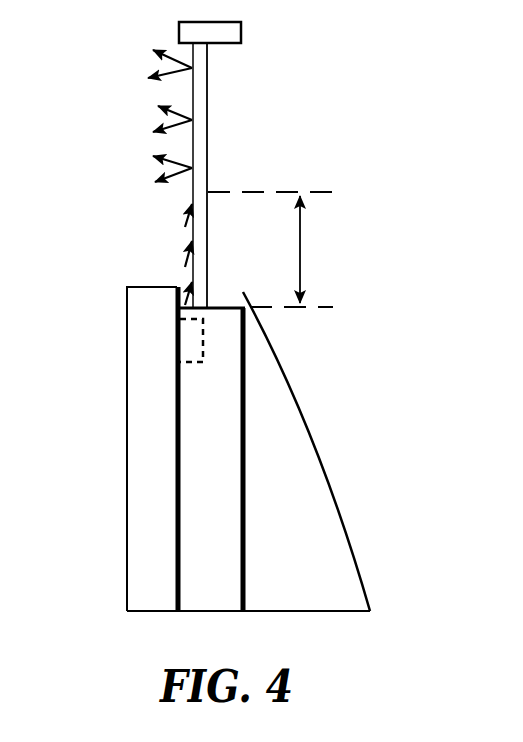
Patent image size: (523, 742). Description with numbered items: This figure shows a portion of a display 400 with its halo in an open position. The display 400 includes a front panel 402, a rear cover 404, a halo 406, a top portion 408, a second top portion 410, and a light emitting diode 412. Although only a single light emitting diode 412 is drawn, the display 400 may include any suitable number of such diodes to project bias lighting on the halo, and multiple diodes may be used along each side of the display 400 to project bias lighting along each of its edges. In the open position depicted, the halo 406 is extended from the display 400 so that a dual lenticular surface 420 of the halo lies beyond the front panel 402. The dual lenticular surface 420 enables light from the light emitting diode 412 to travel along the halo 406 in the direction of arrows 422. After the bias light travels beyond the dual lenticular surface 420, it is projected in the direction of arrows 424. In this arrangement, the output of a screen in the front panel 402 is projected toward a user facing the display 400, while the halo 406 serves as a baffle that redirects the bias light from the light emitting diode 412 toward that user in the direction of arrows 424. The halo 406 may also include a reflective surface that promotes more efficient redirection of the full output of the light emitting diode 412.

The display 400 is at (452, 661).
The front panel 402 is at (142, 520).
The rear cover 404 is at (310, 511).
The halo 406 is at (198, 142).
The top portion 408 is at (217, 34).
The top portion 410 is at (207, 465).
The light emitting diode (LED) 412 is at (188, 335).
The dual lenticular surface 420 is at (277, 249).
The arrows 422 is at (162, 254).
The arrows 424 is at (149, 116).